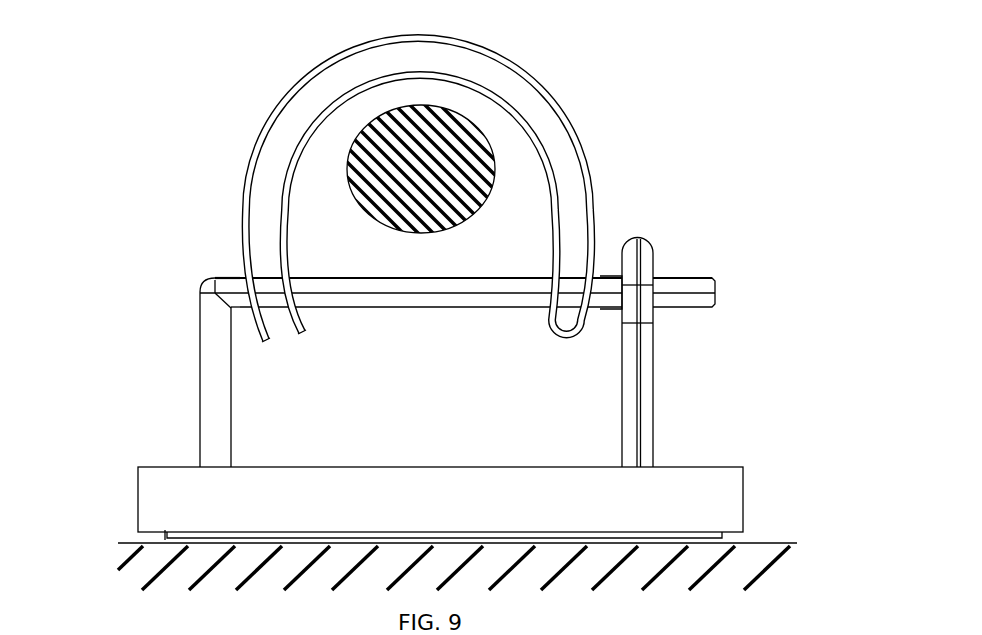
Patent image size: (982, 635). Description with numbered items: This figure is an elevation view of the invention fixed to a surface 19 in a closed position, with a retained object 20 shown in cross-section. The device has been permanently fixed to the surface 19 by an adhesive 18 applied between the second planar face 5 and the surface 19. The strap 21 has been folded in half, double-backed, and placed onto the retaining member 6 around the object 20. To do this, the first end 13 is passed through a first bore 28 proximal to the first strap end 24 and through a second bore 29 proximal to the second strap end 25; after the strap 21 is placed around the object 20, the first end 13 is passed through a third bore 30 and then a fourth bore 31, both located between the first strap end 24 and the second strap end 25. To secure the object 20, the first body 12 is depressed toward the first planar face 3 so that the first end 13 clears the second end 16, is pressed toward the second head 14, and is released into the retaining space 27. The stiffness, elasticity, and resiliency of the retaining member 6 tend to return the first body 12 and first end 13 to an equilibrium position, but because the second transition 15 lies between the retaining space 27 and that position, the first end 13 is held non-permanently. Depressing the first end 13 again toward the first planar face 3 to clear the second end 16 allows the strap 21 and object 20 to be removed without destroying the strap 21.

The first planar face 3 is at (716, 467).
The second planar face 5 is at (740, 537).
The retaining member 6 is at (140, 343).
The first body 12 is at (462, 298).
The first end 13 is at (683, 283).
The second head 14 is at (647, 415).
The second transition 15 is at (646, 246).
The second end 16 is at (645, 323).
The adhesive 18 is at (165, 538).
The surface 19 is at (690, 581).
The object 20 is at (443, 181).
The strap 21 is at (303, 87).
The first strap end 24 is at (267, 358).
The second strap end 25 is at (318, 351).
The retaining space 27 is at (620, 298).
The first bore 28 is at (232, 279).
The second bore 29 is at (300, 284).
The third bore 30 is at (548, 292).
The fourth bore 31 is at (607, 280).